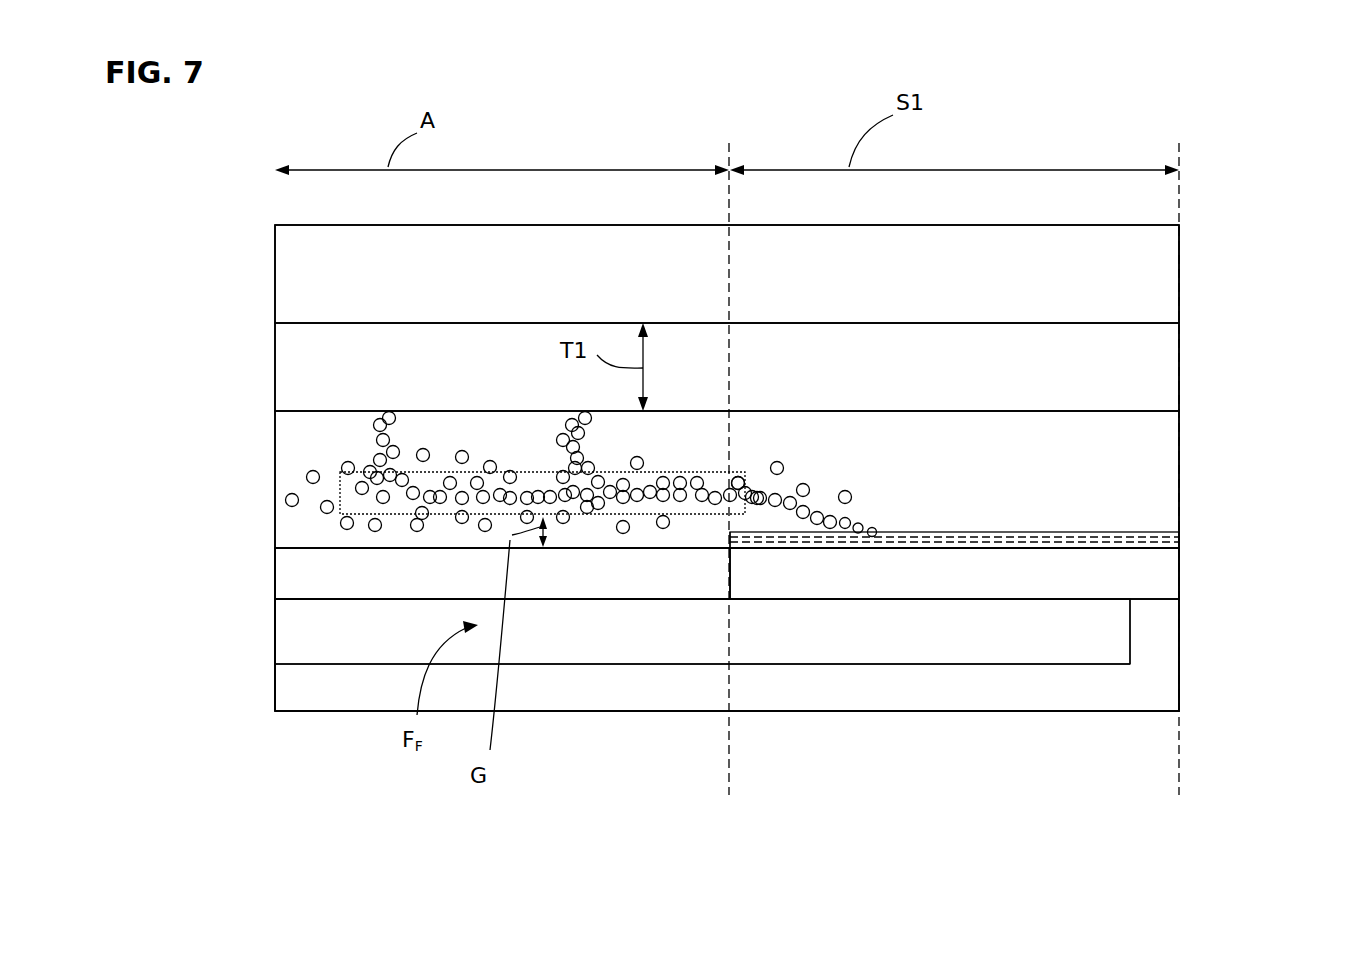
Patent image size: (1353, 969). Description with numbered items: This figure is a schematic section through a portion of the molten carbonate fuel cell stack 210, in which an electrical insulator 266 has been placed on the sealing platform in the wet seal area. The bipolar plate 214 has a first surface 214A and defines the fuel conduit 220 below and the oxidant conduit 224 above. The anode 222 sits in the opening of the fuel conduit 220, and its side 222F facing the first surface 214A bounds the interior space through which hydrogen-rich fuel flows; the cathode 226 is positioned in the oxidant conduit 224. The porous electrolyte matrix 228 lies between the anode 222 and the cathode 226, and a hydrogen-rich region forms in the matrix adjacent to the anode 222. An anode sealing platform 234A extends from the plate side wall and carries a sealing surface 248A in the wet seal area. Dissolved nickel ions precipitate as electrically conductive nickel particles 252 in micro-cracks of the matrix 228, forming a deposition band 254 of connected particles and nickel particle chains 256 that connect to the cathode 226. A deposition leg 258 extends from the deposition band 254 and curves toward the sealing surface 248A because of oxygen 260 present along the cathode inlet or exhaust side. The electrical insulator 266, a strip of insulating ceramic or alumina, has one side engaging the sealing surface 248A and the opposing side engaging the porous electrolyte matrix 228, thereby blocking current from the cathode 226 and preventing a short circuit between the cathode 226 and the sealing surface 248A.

The MCFC stack 210 is at (1077, 92).
The oxygen 260 is at (1332, 372).
The oxidant conduit 224 is at (1205, 257).
The cathode 226 is at (1137, 369).
The deposition leg 258 is at (823, 512).
The porous electrolyte matrix 228 is at (1108, 442).
The electrical insulator 266 is at (1110, 543).
The anode sealing platform 234A is at (922, 571).
The fuel conduit 220 is at (1206, 633).
The anode 222 is at (302, 575).
The first surface 214A is at (302, 662).
The bipolar plate 214 is at (313, 703).
The side of the anode 222F is at (396, 597).
The sealing surface 248A is at (1012, 543).
The nickel particle chains 256 is at (540, 445).
The nickel particles 252 is at (377, 455).
The deposition band 254 is at (340, 495).